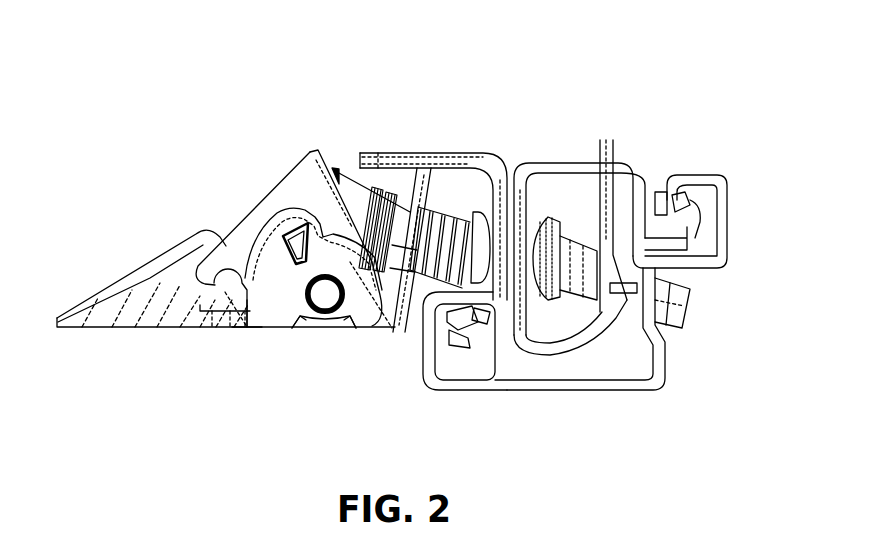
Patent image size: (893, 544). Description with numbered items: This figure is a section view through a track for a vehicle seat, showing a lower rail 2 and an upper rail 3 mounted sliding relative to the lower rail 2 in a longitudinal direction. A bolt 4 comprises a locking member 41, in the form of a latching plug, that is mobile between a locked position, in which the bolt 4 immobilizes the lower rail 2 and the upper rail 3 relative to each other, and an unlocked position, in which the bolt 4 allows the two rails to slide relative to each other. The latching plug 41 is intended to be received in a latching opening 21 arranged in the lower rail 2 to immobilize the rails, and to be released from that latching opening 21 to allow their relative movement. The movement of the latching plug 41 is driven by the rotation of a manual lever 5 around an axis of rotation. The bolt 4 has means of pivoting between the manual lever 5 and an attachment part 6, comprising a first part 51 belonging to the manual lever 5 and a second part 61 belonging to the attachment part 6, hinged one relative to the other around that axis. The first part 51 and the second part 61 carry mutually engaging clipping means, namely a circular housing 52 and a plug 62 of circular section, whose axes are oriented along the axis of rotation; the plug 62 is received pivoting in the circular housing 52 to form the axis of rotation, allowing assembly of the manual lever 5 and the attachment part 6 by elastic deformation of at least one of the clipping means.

The lower rail 2 is at (610, 411).
The latching opening 21 is at (672, 337).
The upper rail 3 is at (556, 142).
The bolt 4 is at (331, 139).
The locking member 41 is at (415, 296).
The manual lever 5 is at (141, 232).
The first part 51 is at (256, 358).
The circular housing 52 is at (294, 342).
The attachment part 6 is at (456, 122).
The second part 61 is at (353, 342).
The plug 62 is at (329, 343).